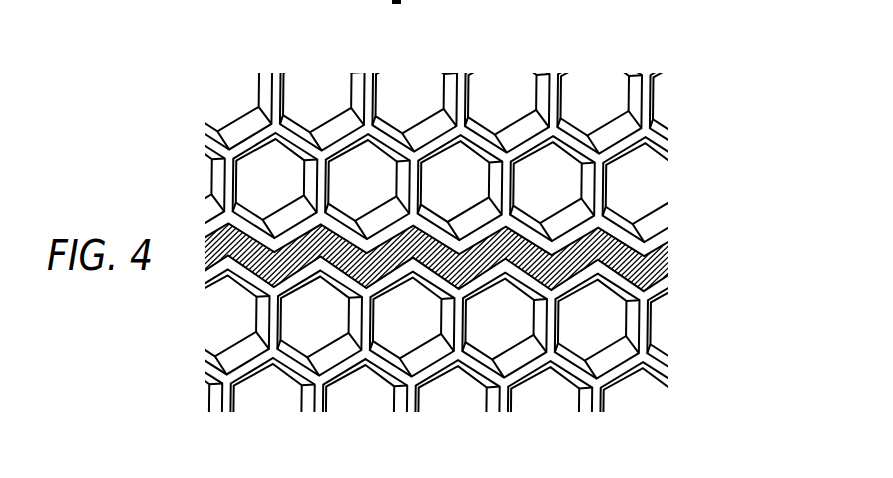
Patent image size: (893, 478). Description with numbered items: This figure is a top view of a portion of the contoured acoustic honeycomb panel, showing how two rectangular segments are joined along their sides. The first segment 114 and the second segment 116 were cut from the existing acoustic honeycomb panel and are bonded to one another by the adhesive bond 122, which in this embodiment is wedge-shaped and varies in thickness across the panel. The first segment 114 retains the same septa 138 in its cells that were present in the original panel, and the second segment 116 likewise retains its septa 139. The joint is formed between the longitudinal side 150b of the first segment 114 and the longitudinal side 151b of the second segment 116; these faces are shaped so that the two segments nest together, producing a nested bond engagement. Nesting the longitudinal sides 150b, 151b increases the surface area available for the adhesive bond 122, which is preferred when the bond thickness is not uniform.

The first segment 114 is at (453, 143).
The second segment 116 is at (462, 363).
The adhesive bond 122 is at (464, 235).
The septa 138 is at (602, 323).
The septa 139 is at (632, 175).
The longitudinal side 150b is at (343, 240).
The longitudinal side 151b is at (385, 268).